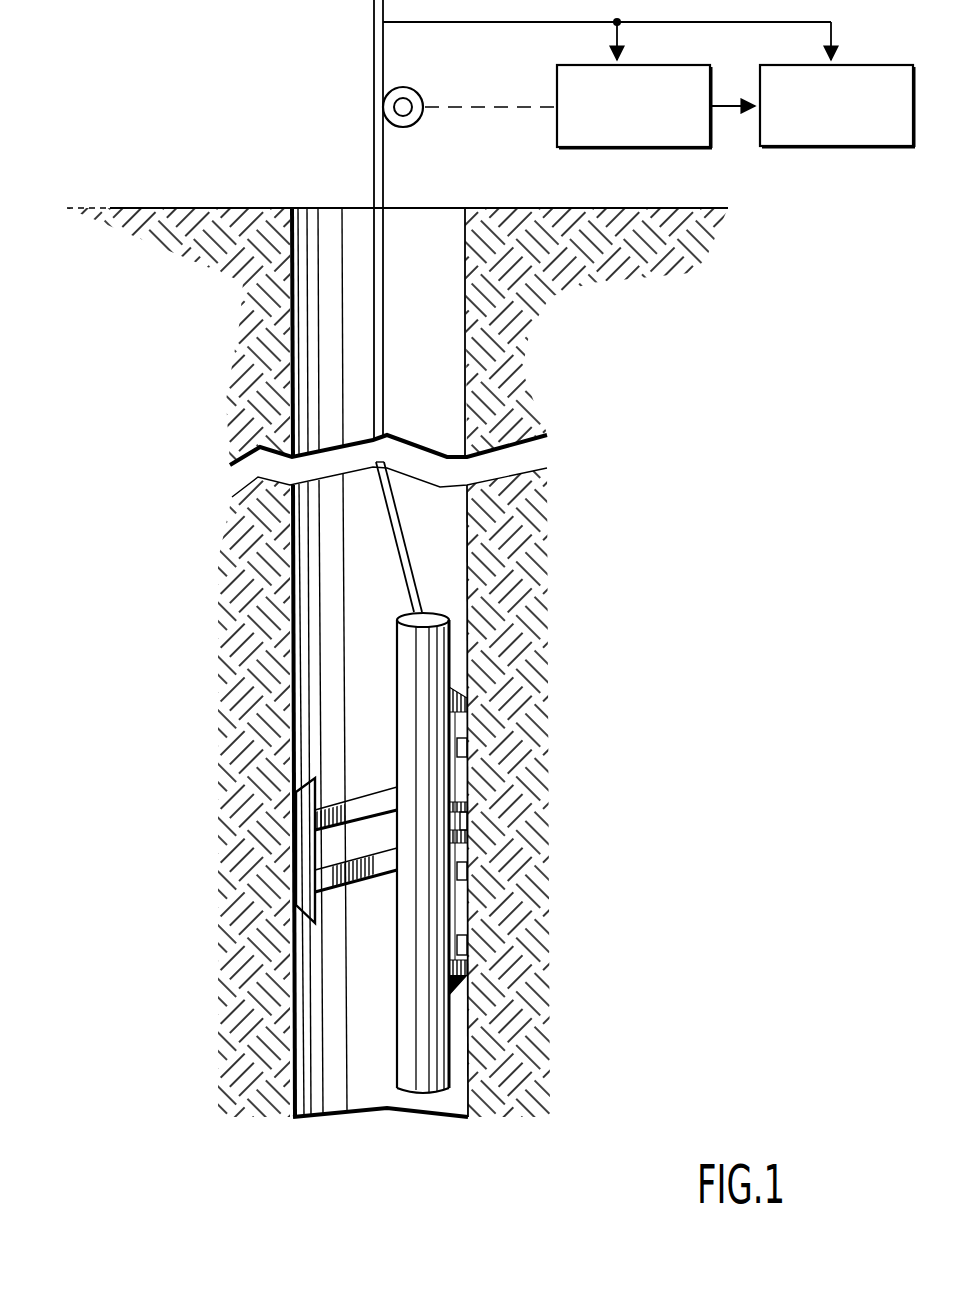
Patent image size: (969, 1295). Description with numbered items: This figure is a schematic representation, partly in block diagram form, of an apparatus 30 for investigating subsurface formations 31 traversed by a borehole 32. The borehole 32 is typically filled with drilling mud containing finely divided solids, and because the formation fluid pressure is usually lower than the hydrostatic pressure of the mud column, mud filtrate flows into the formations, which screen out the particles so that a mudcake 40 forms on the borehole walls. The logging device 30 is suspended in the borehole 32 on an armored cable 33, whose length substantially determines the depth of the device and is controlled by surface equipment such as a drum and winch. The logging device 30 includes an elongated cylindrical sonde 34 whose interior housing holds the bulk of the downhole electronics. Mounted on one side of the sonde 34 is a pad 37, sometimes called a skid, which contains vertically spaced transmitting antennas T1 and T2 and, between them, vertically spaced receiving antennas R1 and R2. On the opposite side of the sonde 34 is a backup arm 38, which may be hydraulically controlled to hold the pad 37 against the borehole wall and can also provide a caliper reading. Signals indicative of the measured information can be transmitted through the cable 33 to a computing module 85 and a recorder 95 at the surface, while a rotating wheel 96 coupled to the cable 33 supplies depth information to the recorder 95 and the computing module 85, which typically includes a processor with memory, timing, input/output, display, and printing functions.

The logging device 30 is at (387, 811).
The subsurface formations 31 is at (207, 218).
The borehole 32 is at (336, 288).
The armored cable 33 is at (373, 140).
The sonde 34 is at (407, 700).
The pad 37 is at (467, 702).
The backup arm 38 is at (303, 877).
The mudcake 40 is at (297, 682).
The computing module 85 is at (555, 83).
The recorder 95 is at (838, 128).
The rotating wheel 96 is at (420, 127).
The transmitting antenna T1 is at (467, 750).
The transmitting antenna T2 is at (467, 946).
The receiving antenna R1 is at (467, 820).
The receiving antenna R2 is at (467, 877).